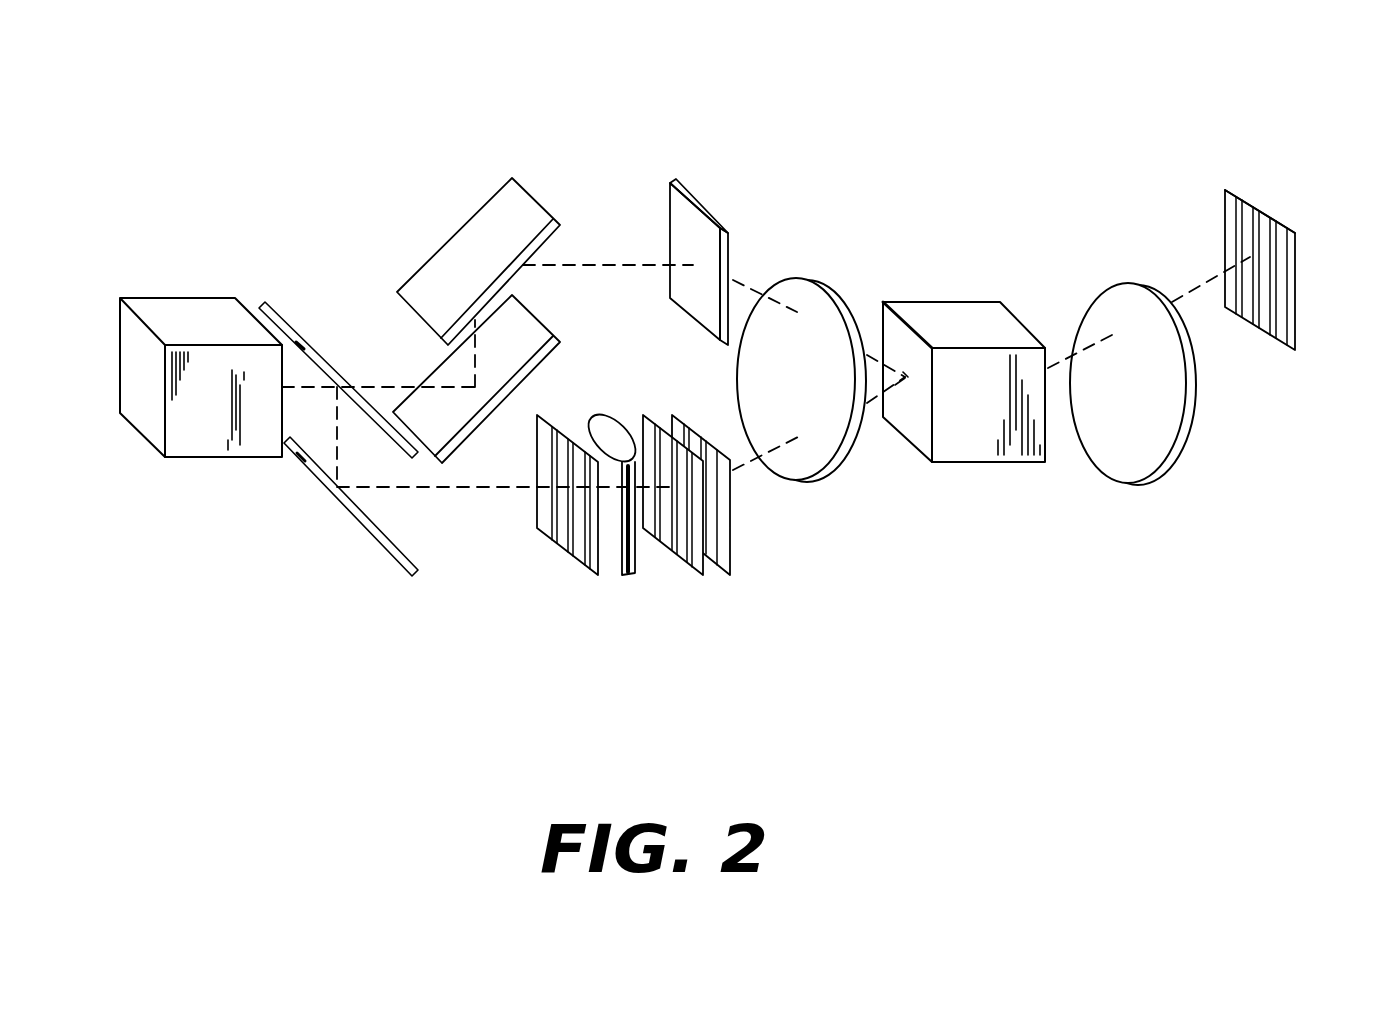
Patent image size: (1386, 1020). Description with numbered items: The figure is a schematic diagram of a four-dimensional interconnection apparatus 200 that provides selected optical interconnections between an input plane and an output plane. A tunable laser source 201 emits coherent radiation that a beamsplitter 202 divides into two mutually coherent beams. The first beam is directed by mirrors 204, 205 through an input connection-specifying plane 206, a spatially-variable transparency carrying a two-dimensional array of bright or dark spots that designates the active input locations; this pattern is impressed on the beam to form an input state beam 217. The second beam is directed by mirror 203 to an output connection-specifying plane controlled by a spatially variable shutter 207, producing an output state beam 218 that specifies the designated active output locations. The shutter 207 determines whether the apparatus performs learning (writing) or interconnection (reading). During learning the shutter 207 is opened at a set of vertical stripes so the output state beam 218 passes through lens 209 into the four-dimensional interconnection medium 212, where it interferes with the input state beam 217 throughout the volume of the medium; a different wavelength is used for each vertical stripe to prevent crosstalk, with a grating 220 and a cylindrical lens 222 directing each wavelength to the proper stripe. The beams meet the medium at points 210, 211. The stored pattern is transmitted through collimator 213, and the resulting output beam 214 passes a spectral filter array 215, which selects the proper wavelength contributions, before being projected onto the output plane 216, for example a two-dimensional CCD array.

The four-dimensional interconnection apparatus 200 is at (907, 182).
The tunable laser source 201 is at (213, 443).
The beamsplitter 202 is at (302, 347).
The mirror 203 is at (377, 542).
The mirror 204 is at (545, 370).
The mirror 205 is at (480, 228).
The input connection-specifying plane 206 is at (690, 188).
The spatially variable shutter 207 is at (683, 567).
The lens 209 is at (815, 300).
The input beam entry point 210 is at (903, 372).
The output beam entry point 211 is at (895, 385).
The four-dimensional interconnection medium 212 is at (722, 567).
The collimator 213 is at (1143, 470).
The output beam 214 is at (1202, 278).
The spectral filter array 215 is at (1253, 330).
The output plane 216 is at (1247, 190).
The input state beam 217 is at (745, 287).
The output state beam 218 is at (743, 472).
The grating 220 is at (568, 565).
The cylindrical lens 222 is at (617, 565).